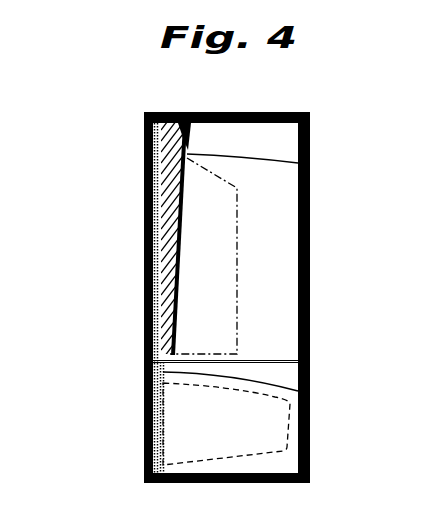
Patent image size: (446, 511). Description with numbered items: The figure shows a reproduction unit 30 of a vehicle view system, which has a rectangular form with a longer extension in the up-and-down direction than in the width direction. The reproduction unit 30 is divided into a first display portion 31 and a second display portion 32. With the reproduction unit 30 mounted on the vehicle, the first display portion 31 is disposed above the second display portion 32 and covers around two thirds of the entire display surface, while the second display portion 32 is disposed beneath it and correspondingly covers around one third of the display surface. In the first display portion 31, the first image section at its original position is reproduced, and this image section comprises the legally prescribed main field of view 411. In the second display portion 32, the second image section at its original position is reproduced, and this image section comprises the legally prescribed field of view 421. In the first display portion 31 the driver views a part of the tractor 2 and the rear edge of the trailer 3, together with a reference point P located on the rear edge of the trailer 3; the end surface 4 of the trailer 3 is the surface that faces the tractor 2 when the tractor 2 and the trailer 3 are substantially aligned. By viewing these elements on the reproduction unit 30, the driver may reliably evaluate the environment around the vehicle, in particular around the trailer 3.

The reproduction unit 30 is at (106, 186).
The tractor 2 is at (158, 112).
The end surface 4 is at (163, 112).
The trailer 3 is at (192, 112).
The reference point P is at (186, 147).
The first display portion 31 is at (275, 288).
The main field of view 411 is at (237, 213).
The second display portion 32 is at (282, 462).
The main field of view 421 is at (270, 397).